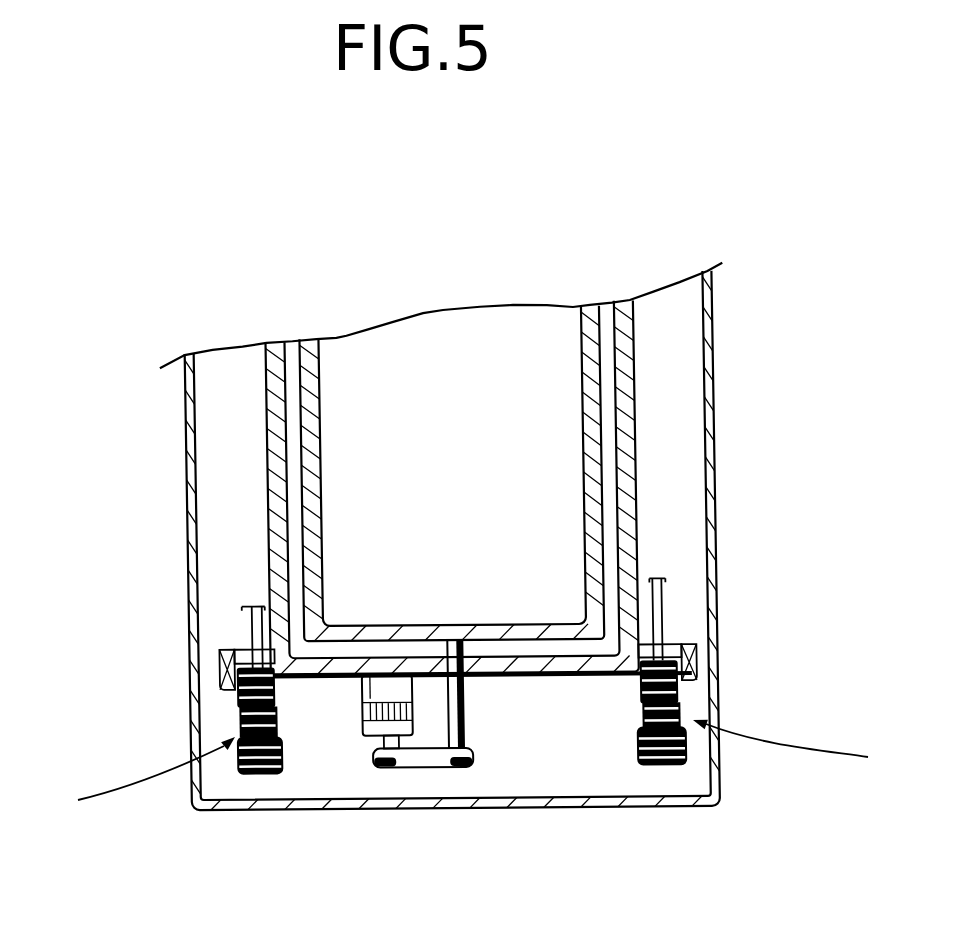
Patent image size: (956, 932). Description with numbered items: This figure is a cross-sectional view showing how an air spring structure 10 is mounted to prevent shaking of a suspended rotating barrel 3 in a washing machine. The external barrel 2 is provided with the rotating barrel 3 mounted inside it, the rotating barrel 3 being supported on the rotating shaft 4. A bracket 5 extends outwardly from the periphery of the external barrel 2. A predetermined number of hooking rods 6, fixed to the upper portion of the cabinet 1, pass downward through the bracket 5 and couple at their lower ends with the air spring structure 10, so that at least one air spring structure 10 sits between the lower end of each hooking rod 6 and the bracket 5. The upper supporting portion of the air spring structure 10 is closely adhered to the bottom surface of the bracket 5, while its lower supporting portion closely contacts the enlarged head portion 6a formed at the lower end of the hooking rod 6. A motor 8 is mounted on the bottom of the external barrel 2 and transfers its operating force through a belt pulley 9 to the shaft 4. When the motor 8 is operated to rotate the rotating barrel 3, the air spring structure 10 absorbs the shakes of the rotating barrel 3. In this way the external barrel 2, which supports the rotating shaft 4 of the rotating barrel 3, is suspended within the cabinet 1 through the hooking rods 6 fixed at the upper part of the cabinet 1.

The cabinet 1 is at (710, 358).
The external barrel 2 is at (630, 338).
The rotating barrel 3 is at (587, 452).
The rotating shaft 4 is at (467, 703).
The bracket 5 is at (218, 676).
The hooking rod 6 is at (250, 623).
The enlarged head portion 6a is at (260, 773).
The motor 8 is at (372, 725).
The belt pulley 9 is at (430, 753).
The air spring structure 10 is at (459, 775).